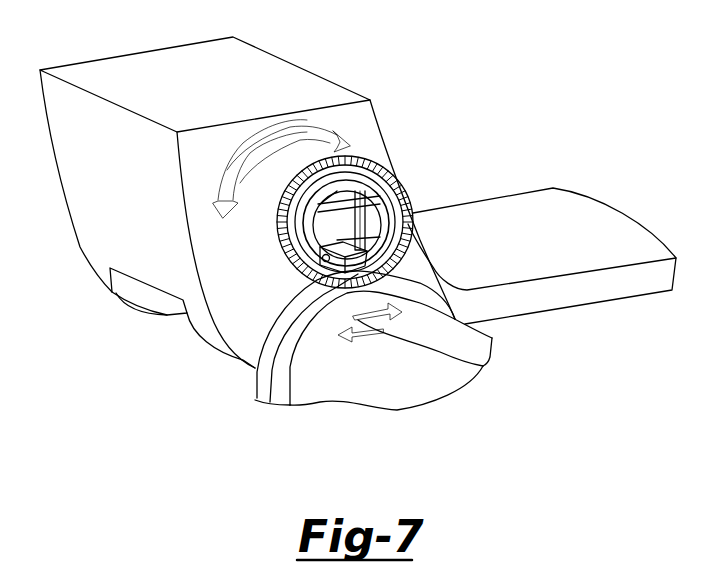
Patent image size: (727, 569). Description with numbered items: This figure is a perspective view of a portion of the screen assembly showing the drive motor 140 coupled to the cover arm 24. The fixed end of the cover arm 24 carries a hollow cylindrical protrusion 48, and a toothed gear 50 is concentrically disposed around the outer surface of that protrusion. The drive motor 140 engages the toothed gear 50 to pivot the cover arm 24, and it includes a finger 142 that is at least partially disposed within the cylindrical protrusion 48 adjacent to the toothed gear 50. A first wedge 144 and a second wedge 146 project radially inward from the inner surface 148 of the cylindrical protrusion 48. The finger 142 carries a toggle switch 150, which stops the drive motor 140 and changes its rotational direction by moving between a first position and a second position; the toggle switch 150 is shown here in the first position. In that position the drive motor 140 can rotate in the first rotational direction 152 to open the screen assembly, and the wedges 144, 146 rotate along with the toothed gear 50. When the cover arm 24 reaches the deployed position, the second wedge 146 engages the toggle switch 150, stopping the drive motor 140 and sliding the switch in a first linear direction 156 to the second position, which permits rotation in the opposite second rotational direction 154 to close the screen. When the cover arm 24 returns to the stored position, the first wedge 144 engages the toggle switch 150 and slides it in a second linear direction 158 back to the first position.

The cover arm 24 is at (600, 237).
The cylindrical protrusion 48 is at (275, 195).
The toothed gear 50 is at (324, 156).
The drive motor 140 is at (373, 354).
The finger 142 is at (368, 276).
The first wedge 144 is at (290, 243).
The second wedge 146 is at (370, 203).
The inner surface 148 is at (290, 254).
The toggle switch 150 is at (283, 243).
The first rotational direction 152 is at (216, 201).
The second rotational direction 154 is at (333, 140).
The first linear direction 156 is at (358, 320).
The second linear direction 158 is at (488, 362).